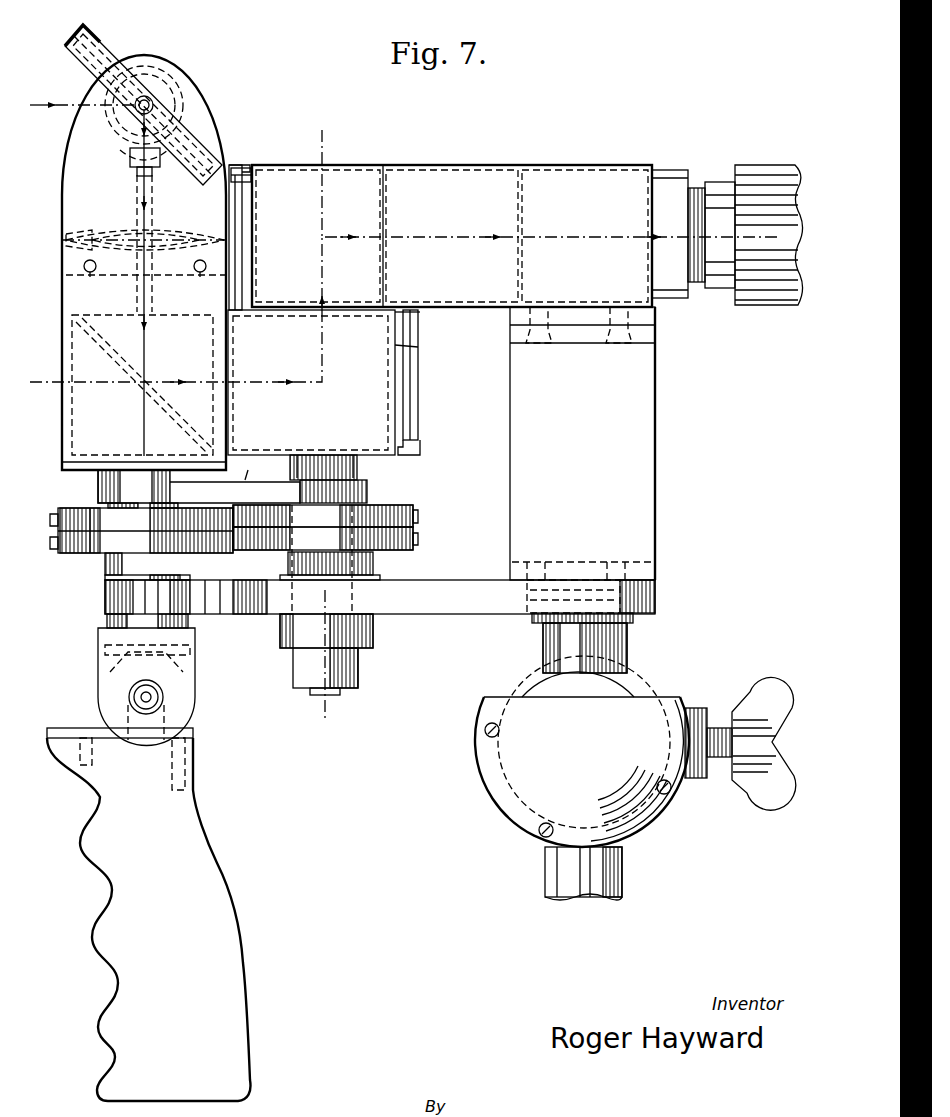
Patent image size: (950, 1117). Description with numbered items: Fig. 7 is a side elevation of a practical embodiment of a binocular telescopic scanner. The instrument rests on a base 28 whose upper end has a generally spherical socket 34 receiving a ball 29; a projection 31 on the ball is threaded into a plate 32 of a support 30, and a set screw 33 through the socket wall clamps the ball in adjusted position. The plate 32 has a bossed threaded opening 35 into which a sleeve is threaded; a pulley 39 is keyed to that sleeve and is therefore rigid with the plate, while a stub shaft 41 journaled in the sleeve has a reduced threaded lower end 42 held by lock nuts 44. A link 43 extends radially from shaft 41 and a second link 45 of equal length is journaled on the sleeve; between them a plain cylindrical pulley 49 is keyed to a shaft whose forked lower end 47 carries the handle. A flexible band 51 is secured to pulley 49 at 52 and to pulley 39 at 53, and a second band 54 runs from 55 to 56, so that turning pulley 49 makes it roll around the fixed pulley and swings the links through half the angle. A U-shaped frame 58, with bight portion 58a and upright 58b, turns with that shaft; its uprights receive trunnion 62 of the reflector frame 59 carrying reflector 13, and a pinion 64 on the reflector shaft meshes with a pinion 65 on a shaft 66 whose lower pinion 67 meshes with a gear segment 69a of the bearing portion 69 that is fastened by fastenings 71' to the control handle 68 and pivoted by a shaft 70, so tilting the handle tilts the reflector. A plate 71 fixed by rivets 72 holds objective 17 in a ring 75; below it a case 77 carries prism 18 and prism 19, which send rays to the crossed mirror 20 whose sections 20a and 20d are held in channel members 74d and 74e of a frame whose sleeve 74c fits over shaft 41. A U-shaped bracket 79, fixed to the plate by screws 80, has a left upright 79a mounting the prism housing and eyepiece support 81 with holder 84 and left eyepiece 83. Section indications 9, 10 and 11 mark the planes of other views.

The reflector 13 is at (101, 46).
The reflector frame 59 is at (68, 48).
The pinion 64 is at (178, 84).
The trunnion 62 is at (138, 110).
The pinion 65 is at (128, 150).
The ring 75 is at (86, 234).
The objective 17 is at (168, 236).
The plate 71 is at (127, 243).
The rivets 72 is at (90, 273).
The shaft 66 is at (152, 295).
The upright 58b is at (64, 298).
The U-shaped frame 58 is at (61, 434).
The prism 18 is at (130, 356).
The section line 11 is at (33, 394).
The section line 10 is at (33, 512).
The section line 9 is at (334, 146).
The pulley 49 is at (80, 509).
The belt attachment point 52 is at (55, 520).
The belt attachment point 55 is at (55, 545).
The second link 45 is at (110, 563).
The flexible metallic band 54 is at (150, 542).
The bight portion 58a is at (243, 474).
The link 43 is at (248, 486).
The sleeve 74c is at (358, 470).
The stub shaft 41 is at (305, 455).
The mirror section 20a is at (240, 168).
The front channel member 74d is at (236, 214).
The prism housing and eyepiece support 81 is at (586, 178).
The holder 84 is at (668, 175).
The left eyepiece 83 is at (768, 296).
The left upright 79a is at (647, 420).
The case 77 is at (311, 382).
The crossed mirror 20 is at (420, 328).
The prism 19 is at (402, 348).
The rear channel member 74e is at (419, 400).
The mirror section 20d is at (420, 448).
The flexible metallic band 51 is at (386, 506).
The belt attachment point 53 is at (419, 518).
The belt attachment point 56 is at (419, 540).
The pulley 39 is at (383, 554).
The bossed threaded opening 35 is at (355, 598).
The plate 32 is at (448, 611).
The support 30 is at (664, 517).
The U-shaped bracket 79 is at (657, 571).
The screws 80 is at (525, 575).
The projection 31 is at (556, 590).
The ball 29 is at (623, 687).
The spherical socket 34 is at (498, 797).
The set screw 33 is at (723, 760).
The base 28 is at (607, 878).
The lock nuts 44 is at (296, 664).
The reduced threaded lower end 42 is at (312, 696).
The pinion 67 is at (197, 651).
The gear segment 69a is at (106, 662).
The forked lower end 47 is at (108, 689).
The shaft 70 is at (163, 698).
The bearing portion 69 is at (57, 718).
The fastenings 71' is at (137, 766).
The control handle 68 is at (205, 872).